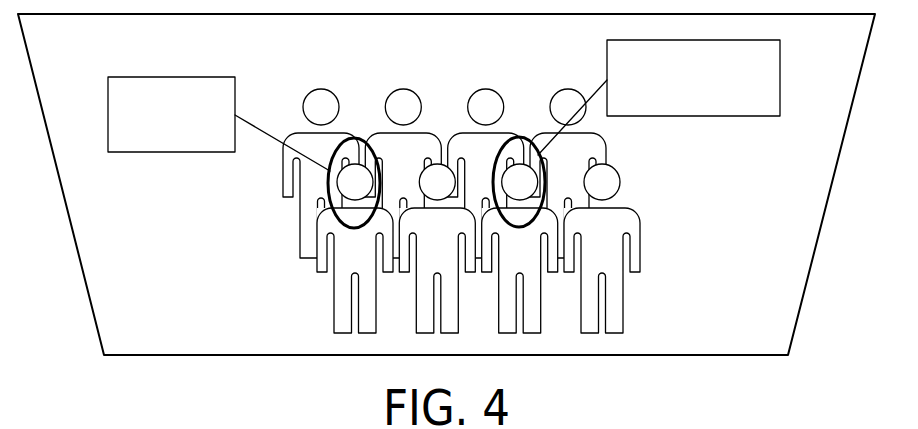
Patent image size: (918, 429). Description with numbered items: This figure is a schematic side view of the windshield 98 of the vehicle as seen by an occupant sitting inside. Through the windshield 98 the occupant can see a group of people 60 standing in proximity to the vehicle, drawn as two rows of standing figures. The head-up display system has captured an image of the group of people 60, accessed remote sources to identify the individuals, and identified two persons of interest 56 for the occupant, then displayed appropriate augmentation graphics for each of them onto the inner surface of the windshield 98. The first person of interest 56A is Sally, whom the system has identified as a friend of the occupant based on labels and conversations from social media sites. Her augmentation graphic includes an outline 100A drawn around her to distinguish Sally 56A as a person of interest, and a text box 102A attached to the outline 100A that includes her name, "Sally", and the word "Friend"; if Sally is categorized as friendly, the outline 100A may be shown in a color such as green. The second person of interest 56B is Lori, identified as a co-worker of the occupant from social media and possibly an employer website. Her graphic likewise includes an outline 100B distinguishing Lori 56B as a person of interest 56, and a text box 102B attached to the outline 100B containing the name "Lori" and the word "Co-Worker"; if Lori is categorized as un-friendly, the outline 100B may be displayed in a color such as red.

The windshield 98 is at (799, 317).
The group of people 60 is at (467, 243).
The persons of interest 56 is at (467, 248).
The first person of interest 56A is at (348, 262).
The second person of interest 56B is at (530, 273).
The outline 100A is at (334, 217).
The outline 100B is at (543, 208).
The text box 102A is at (172, 152).
The text box 102B is at (693, 116).